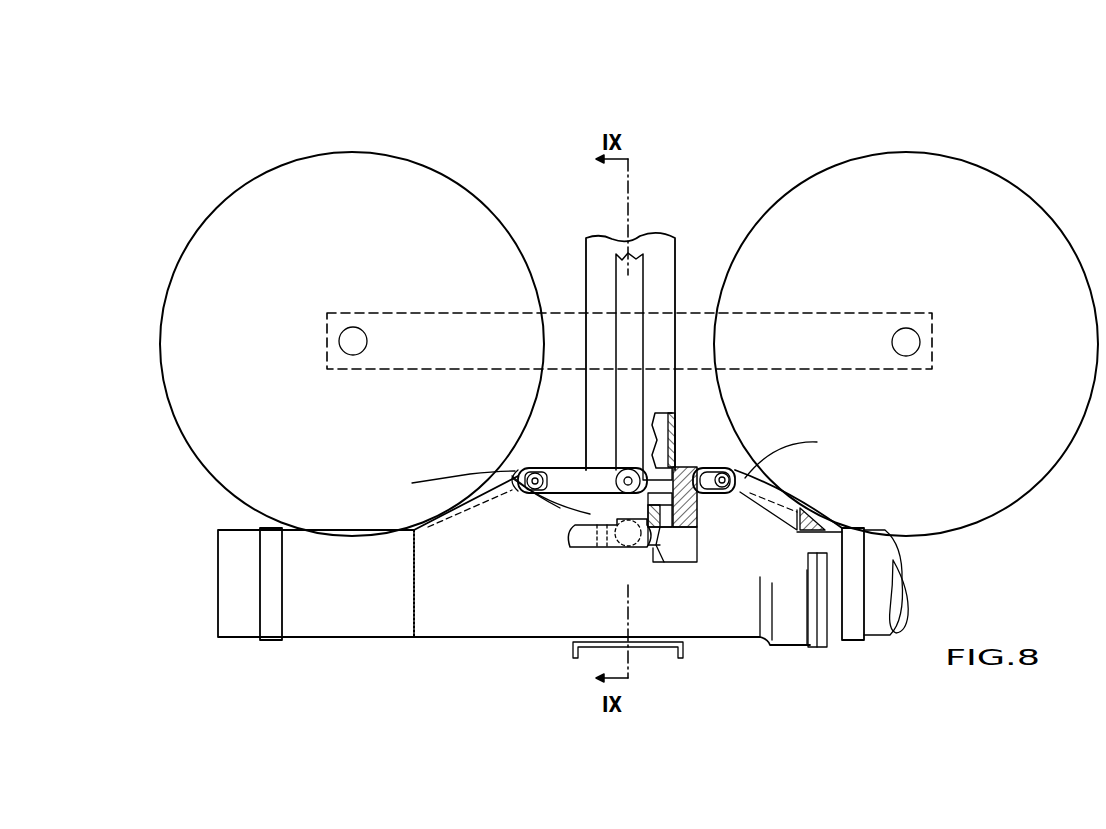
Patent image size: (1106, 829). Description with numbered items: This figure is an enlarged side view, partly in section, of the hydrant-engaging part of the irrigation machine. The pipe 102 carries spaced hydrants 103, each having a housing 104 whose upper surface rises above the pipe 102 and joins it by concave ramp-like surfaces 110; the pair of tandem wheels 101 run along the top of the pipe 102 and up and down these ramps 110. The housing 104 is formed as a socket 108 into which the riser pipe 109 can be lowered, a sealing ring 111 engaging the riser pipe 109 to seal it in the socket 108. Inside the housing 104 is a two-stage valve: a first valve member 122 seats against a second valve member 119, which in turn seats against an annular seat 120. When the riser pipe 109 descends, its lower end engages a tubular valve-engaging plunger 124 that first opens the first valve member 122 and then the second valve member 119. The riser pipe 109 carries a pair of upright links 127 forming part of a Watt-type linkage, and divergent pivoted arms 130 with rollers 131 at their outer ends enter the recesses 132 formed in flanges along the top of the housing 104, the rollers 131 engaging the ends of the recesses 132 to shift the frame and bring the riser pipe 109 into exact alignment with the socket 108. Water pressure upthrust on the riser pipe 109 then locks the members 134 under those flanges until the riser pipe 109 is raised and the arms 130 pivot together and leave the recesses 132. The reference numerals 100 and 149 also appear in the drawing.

The assembly 100 is at (694, 280).
The wheels 101 is at (835, 190).
The pipe 102 is at (322, 625).
The hydrants 103 is at (566, 452).
The housing 104 is at (509, 615).
The socket 108 is at (700, 505).
The riser pipe 109 is at (679, 450).
The ramp-like surfaces 110 is at (614, 463).
The sealing ring 111 is at (683, 462).
The second valve member 119 is at (668, 537).
The annular seat 120 is at (677, 513).
The first valve member 122 is at (655, 550).
The tubular valve-engaging plunger 124 is at (684, 500).
The links 127 is at (624, 282).
The arms 130 is at (548, 462).
The rollers 131 is at (533, 470).
The recesses 132 is at (547, 500).
The locking members 134 is at (572, 542).
The pin hole 149 is at (601, 548).